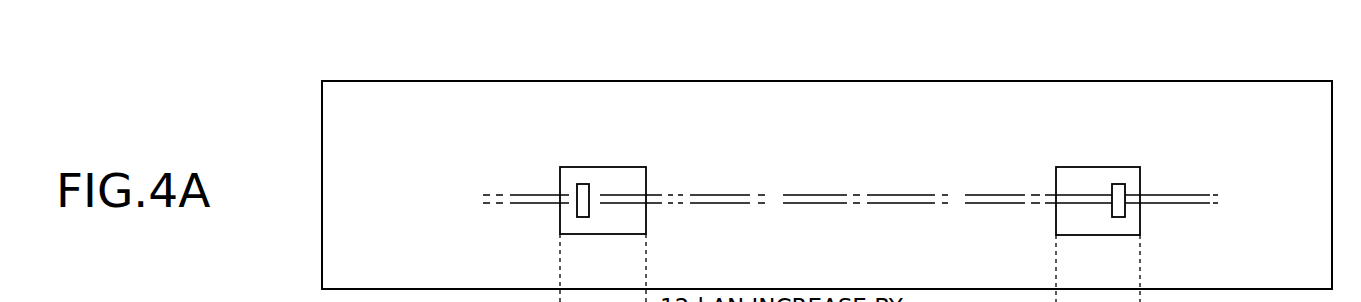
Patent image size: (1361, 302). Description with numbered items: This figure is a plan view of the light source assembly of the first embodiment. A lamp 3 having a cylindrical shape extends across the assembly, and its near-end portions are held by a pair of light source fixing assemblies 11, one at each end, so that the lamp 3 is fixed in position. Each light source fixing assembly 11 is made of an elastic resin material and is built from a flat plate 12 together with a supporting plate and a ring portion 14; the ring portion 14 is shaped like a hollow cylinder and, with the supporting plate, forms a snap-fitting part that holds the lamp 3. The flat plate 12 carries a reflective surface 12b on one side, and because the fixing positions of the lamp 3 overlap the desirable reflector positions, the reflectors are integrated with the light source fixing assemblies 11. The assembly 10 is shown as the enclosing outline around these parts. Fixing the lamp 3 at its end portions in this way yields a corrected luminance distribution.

The substrate 10 is at (968, 81).
The lamp 3 is at (913, 195).
The light source fixing assembly 11 is at (848, 196).
The flat plate 12 is at (617, 166).
The reflective surface 12b is at (585, 170).
The ring portion 14 is at (577, 190).